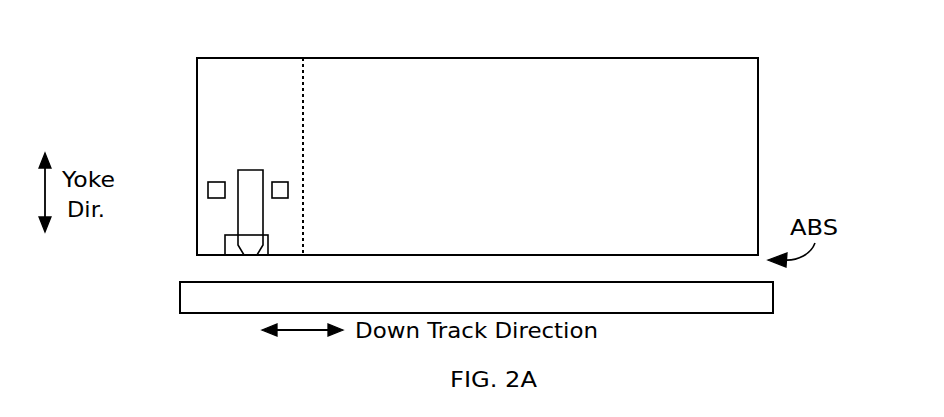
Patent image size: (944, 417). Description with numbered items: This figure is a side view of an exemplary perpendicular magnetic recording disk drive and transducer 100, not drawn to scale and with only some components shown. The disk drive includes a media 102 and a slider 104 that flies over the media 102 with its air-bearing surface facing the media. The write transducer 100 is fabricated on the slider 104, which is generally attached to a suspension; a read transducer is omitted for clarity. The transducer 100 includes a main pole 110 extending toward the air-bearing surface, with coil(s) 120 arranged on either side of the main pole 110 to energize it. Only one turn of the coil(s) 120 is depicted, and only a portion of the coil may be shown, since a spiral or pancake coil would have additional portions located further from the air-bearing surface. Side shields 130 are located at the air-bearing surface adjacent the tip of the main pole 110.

The transducer 100 is at (197, 60).
The media 102 is at (180, 310).
The slider 104 is at (758, 123).
The main pole 110 is at (238, 170).
The coil(s) 120 is at (272, 182).
The side shields 130 is at (232, 256).